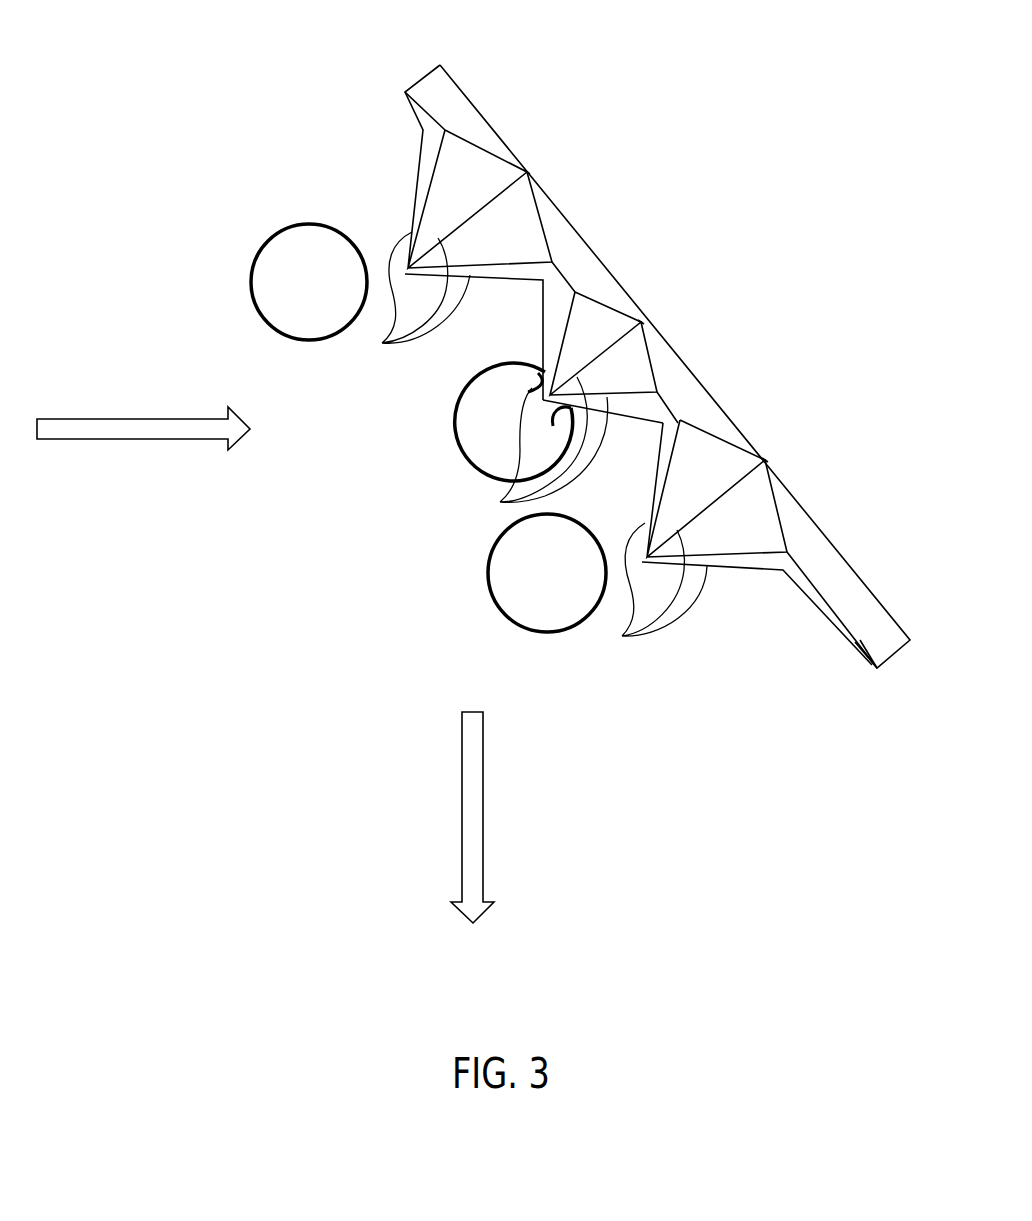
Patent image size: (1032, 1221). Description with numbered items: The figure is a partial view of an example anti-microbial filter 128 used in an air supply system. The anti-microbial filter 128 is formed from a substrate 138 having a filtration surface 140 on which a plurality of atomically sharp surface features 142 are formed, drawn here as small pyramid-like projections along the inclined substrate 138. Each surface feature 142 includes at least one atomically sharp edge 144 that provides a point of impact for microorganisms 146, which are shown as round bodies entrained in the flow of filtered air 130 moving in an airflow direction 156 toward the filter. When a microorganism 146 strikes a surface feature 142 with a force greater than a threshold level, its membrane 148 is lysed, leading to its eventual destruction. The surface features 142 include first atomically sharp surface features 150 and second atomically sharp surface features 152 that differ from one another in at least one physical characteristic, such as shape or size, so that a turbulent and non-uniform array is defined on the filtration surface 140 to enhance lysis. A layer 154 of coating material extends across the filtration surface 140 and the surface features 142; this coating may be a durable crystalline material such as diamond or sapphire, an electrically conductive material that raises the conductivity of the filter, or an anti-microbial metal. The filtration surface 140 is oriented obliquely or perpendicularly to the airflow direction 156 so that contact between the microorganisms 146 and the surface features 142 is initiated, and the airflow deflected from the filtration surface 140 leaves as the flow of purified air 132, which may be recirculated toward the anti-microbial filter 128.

The anti-microbial filter 128 is at (745, 126).
The flow of filtered air 130 is at (80, 419).
The airflow direction 156 is at (143, 428).
The flow of purified air 132 is at (483, 807).
The substrate 138 is at (457, 58).
The filtration surface 140 is at (831, 650).
The atomically sharp surface features 142 is at (540, 172).
The atomically sharp edge 144 is at (622, 636).
The microorganisms 146 is at (249, 214).
The membrane 148 is at (502, 612).
The first atomically sharp surface features 150 is at (502, 157).
The second atomically sharp surface features 152 is at (662, 348).
The layer of coating material 154 is at (748, 570).